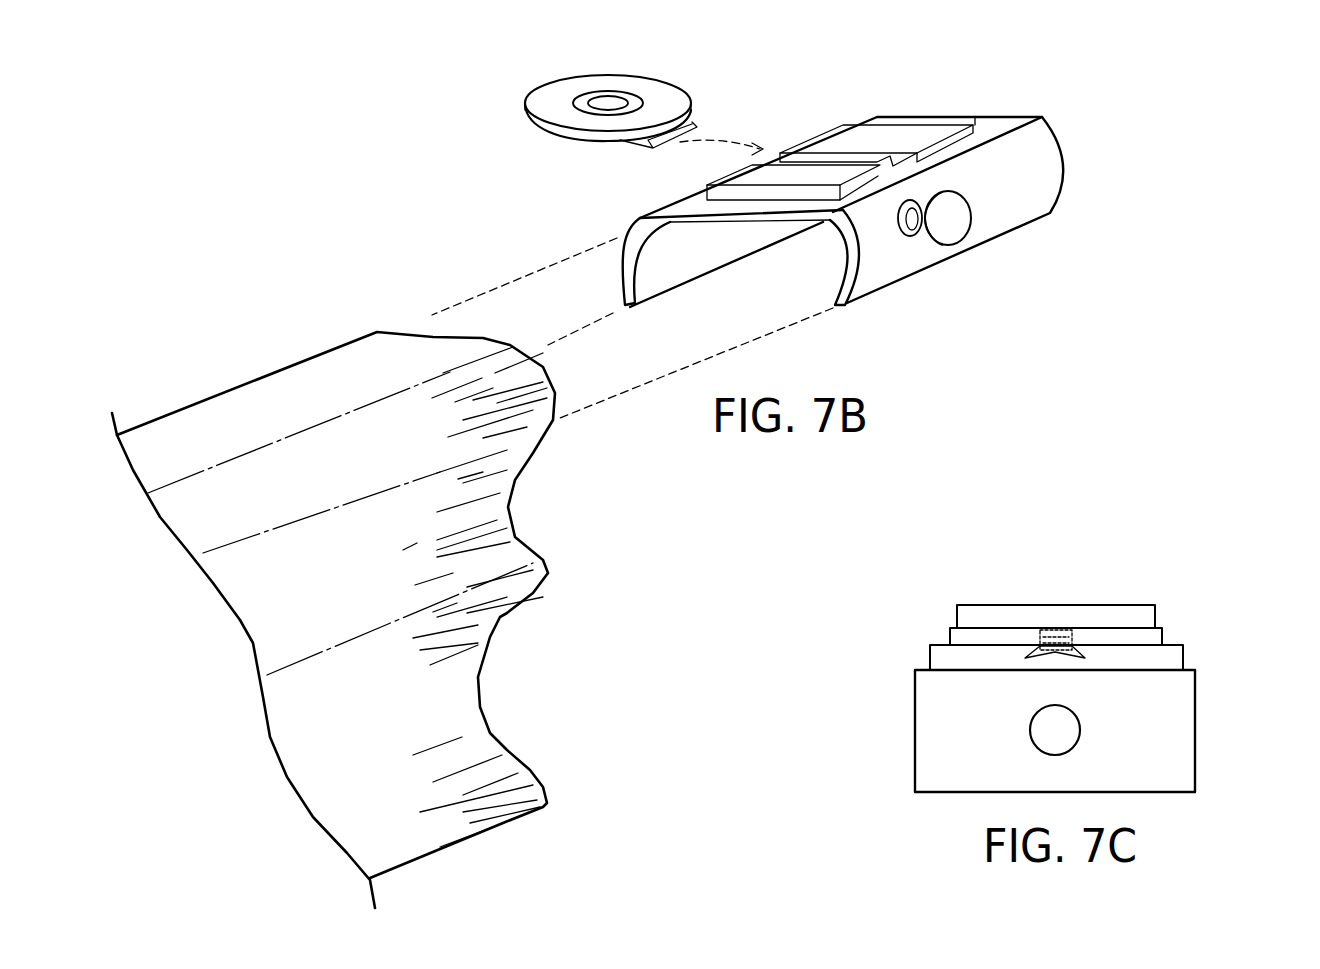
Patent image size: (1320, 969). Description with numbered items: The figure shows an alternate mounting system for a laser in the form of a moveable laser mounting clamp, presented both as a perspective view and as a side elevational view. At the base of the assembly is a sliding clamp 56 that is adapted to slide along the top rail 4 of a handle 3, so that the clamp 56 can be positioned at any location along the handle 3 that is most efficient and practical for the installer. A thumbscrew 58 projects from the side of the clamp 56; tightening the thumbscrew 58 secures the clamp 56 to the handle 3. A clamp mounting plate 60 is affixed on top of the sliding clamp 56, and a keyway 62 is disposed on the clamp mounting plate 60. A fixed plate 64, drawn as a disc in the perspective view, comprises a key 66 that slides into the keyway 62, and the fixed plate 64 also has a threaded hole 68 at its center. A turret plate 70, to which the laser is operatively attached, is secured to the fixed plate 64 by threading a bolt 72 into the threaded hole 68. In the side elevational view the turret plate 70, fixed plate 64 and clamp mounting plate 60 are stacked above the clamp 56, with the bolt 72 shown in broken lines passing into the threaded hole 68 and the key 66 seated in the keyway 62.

In FIG. 7B, the handle 3 is at (228, 420).
In FIG. 7B, the top rail 4 is at (378, 322).
In FIG. 7B, the sliding clamp 56 is at (1050, 163).
In FIG. 7C, the sliding clamp 56 is at (1170, 707).
In FIG. 7B, the thumbscrew 58 is at (952, 230).
In FIG. 7C, the thumbscrew 58 is at (1067, 733).
In FIG. 7B, the clamp mounting plate 60 is at (967, 137).
In FIG. 7C, the clamp mounting plate 60 is at (1163, 660).
In FIG. 7B, the keyway 62 is at (893, 162).
In FIG. 7C, the keyway 62 is at (1040, 655).
In FIG. 7B, the fixed plate 64 is at (543, 102).
In FIG. 7C, the fixed plate 64 is at (963, 638).
In FIG. 7B, the key 66 is at (690, 127).
In FIG. 7B, the threaded hole 68 is at (610, 103).
In FIG. 7C, the threaded hole 68 is at (1037, 633).
In FIG. 7C, the turret plate 70 is at (1130, 620).
In FIG. 7C, the bolt 72 is at (1063, 630).